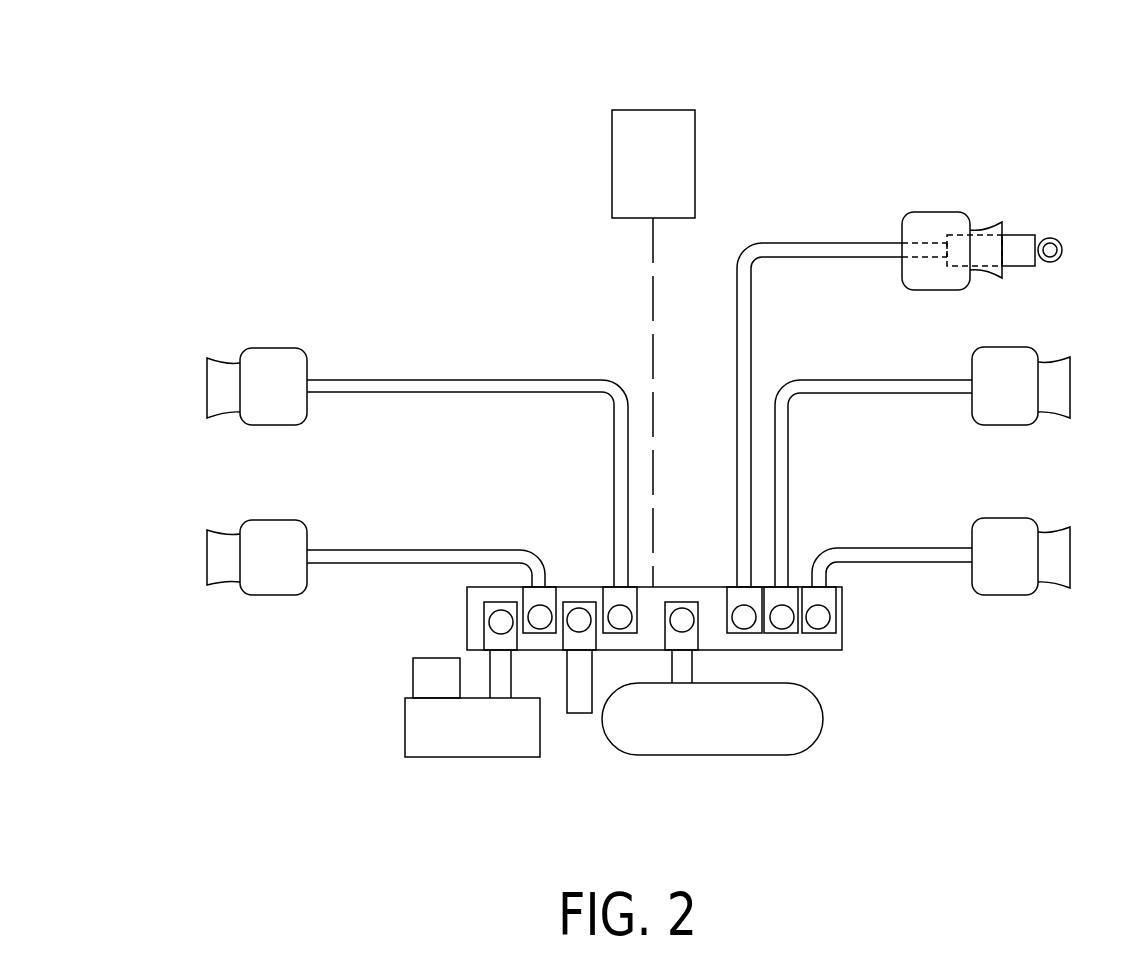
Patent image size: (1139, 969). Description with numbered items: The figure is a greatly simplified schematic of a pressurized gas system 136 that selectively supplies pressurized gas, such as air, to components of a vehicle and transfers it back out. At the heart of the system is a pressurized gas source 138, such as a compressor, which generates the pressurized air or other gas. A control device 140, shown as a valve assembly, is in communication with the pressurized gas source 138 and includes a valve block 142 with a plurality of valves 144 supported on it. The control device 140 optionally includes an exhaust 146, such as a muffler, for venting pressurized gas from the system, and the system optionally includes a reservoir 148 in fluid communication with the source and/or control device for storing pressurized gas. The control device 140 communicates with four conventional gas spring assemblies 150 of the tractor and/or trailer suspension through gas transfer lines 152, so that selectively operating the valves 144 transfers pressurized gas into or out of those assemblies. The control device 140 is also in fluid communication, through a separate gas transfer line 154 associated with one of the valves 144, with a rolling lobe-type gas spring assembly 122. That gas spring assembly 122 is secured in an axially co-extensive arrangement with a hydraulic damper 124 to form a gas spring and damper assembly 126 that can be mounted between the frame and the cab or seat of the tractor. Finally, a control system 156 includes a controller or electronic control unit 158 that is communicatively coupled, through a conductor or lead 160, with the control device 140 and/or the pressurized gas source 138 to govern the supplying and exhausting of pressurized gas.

The gas spring assembly 122 is at (933, 212).
The damper 124 is at (1025, 232).
The gas spring and damper assembly 126 is at (998, 193).
The pressurized gas system 136 is at (313, 715).
The pressurized gas source 138 is at (470, 735).
The control device 140 is at (463, 615).
The valve block 142 is at (843, 632).
The valves 144 is at (620, 616).
The exhaust 146 is at (582, 703).
The reservoir 148 is at (748, 737).
The gas spring assemblies 150 is at (268, 348).
The gas transfer lines 152 is at (450, 380).
The gas transfer line 154 is at (822, 243).
The control system 156 is at (738, 115).
The controller 158 is at (676, 178).
The conductor or lead 160 is at (660, 358).